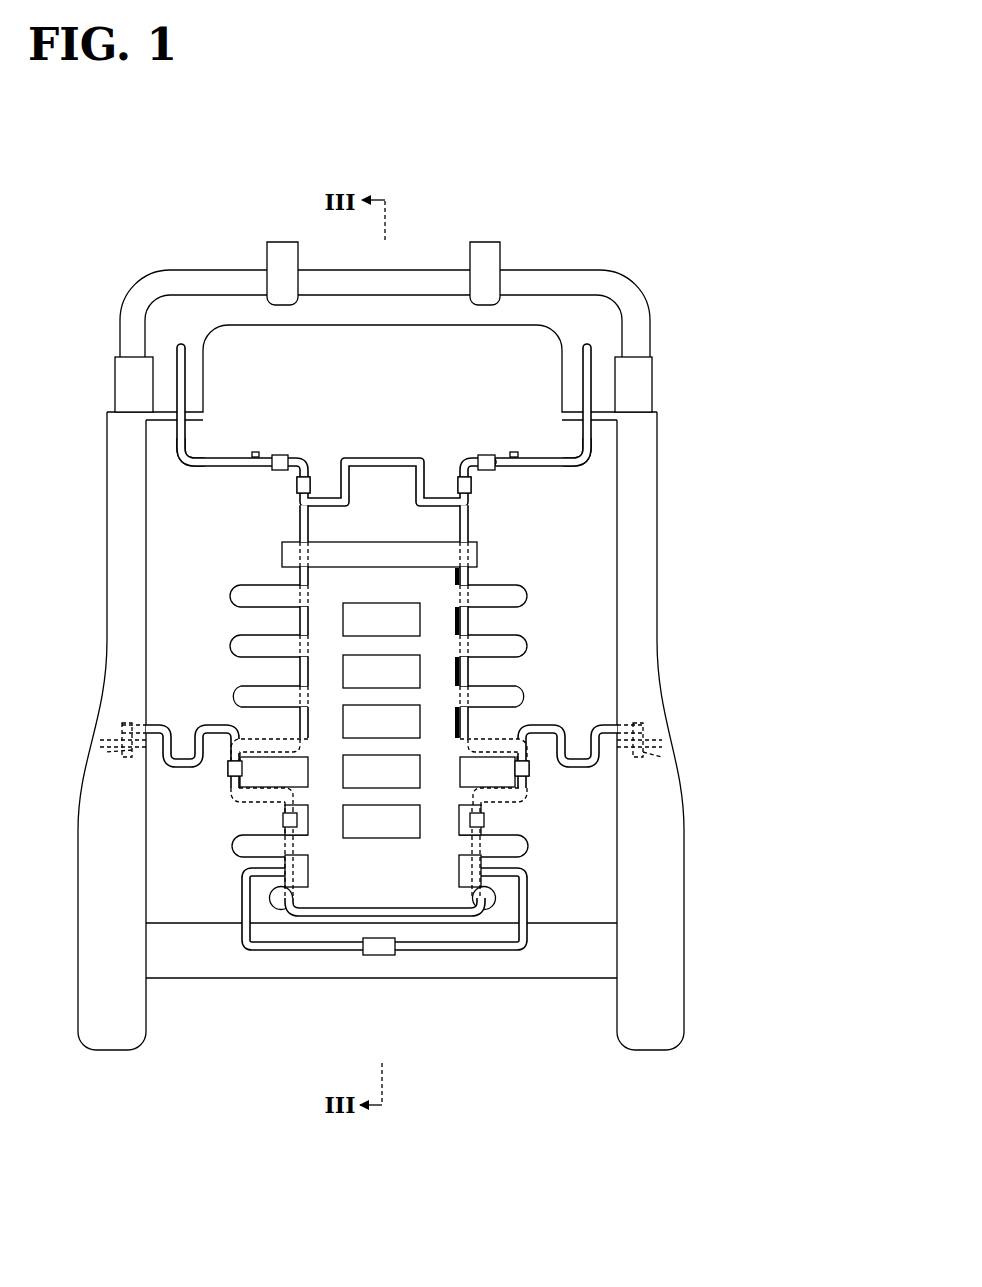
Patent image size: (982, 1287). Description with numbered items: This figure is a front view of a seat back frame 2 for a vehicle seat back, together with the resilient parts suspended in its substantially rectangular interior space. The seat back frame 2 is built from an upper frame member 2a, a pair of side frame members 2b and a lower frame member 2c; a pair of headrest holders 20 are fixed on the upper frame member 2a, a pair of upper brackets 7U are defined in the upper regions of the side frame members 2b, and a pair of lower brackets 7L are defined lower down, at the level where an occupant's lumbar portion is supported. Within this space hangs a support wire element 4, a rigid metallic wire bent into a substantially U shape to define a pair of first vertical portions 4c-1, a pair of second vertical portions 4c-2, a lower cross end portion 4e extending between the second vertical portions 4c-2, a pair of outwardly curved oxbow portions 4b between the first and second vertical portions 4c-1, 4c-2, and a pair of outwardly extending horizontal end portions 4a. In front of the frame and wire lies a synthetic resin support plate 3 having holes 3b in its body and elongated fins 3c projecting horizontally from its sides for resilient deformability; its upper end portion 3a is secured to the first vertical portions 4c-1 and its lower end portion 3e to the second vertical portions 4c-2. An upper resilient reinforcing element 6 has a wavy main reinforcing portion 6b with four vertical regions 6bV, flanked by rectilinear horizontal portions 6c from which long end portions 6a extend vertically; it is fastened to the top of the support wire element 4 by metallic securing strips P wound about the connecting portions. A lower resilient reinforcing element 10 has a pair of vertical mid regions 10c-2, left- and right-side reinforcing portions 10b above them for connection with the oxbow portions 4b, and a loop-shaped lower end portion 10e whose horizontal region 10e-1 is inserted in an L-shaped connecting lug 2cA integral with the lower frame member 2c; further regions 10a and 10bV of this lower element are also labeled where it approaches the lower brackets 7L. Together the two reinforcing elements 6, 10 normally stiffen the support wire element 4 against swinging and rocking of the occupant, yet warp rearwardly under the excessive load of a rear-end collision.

The seat back frame 2 is at (386, 630).
The upper frame member 2a is at (547, 270).
The side frame member 2b is at (78, 825).
The lower frame member 2c is at (178, 933).
The connecting lug 2cA is at (385, 957).
The support plate 3 is at (432, 790).
The upper end portion 3a is at (350, 559).
The holes 3b is at (380, 605).
The elongated fins 3c is at (240, 596).
The lower end portion 3e is at (279, 905).
The support wire element 4 is at (389, 739).
The outwardly horizontally extending end portion 4a is at (255, 450).
The oxbow portion 4b is at (262, 738).
The first rectilinearly-extending vertical portion 4c-1 is at (298, 527).
The second rectilinearly-extending vertical portion 4c-2 is at (289, 880).
The lower cross end portion 4e is at (327, 918).
The upper resilient reinforcing element 6 is at (384, 404).
The long end portion 6a is at (175, 353).
The main reinforcing portion 6b is at (482, 433).
The vertical region 6bV is at (297, 500).
The rectilinearly-extending horizontal portion 6c is at (205, 455).
The upper bracket 7U is at (170, 410).
The lower bracket 7L is at (125, 747).
The lower resilient reinforcing element 10 is at (383, 874).
The bypass pipe portion 10a is at (125, 752).
The reinforcing portion 10b is at (176, 717).
The bypass valve 10bV is at (125, 735).
The vertically-extending mid region 10c-2 is at (283, 828).
The lower end portion 10e is at (241, 908).
The horizontal region 10e-1 is at (492, 950).
The headrest holder 20 is at (280, 240).
The metallic securing strip P is at (310, 472).